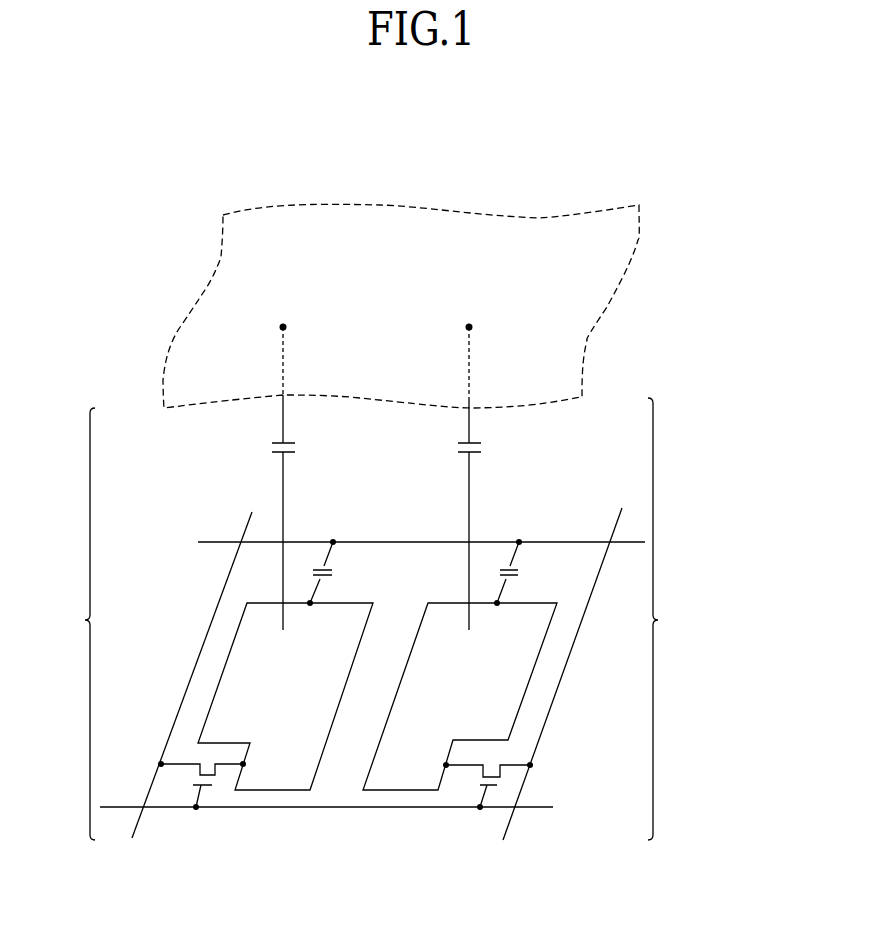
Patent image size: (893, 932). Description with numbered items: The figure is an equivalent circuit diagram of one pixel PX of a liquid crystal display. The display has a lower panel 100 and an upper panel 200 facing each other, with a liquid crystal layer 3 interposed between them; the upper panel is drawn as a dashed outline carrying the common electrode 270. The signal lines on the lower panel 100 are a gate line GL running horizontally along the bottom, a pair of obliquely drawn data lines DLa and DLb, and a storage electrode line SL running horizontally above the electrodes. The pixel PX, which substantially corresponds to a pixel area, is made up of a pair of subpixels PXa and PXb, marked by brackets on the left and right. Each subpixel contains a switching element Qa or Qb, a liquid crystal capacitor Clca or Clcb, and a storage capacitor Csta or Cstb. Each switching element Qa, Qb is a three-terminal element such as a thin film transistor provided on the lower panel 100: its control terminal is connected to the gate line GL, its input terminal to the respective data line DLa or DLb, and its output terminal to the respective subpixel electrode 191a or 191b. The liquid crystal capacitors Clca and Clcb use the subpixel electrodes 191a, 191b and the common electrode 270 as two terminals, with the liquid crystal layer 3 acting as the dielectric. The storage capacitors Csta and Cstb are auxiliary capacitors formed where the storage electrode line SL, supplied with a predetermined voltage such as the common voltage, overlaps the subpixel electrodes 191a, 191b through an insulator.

The common electrode 270 is at (633, 260).
The upper panel 200 is at (696, 283).
The liquid crystal layer 3 is at (712, 421).
The lower panel 100 is at (724, 649).
The subpixel electrode 191a is at (275, 790).
The subpixel electrode 191b is at (534, 670).
The liquid crystal capacitor Clca is at (310, 512).
The liquid crystal capacitor Clcb is at (496, 513).
The storage capacitor Csta is at (347, 572).
The storage capacitor Cstb is at (533, 572).
The storage electrode line SL is at (405, 542).
The gate line GL is at (344, 808).
The data line DLa is at (202, 661).
The data line DLb is at (572, 662).
The switching element Qa is at (202, 785).
The switching element Qb is at (488, 786).
The pixel PX is at (391, 834).
The subpixel PXa is at (56, 621).
The subpixel PXb is at (690, 621).